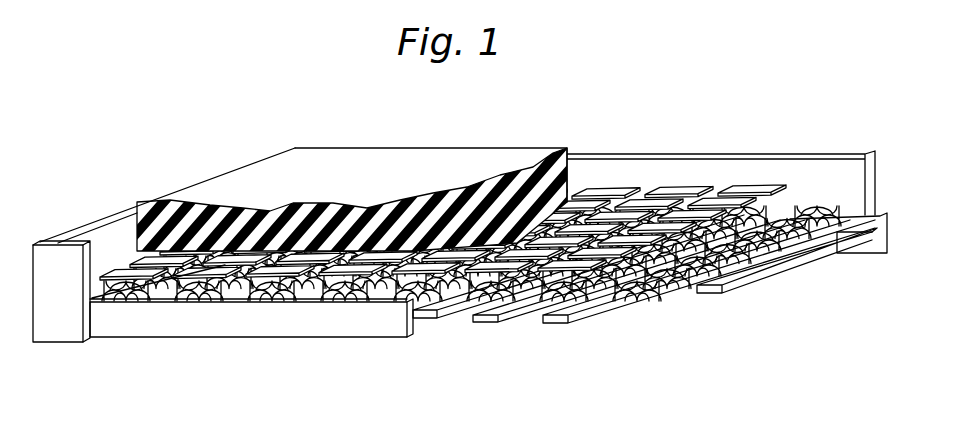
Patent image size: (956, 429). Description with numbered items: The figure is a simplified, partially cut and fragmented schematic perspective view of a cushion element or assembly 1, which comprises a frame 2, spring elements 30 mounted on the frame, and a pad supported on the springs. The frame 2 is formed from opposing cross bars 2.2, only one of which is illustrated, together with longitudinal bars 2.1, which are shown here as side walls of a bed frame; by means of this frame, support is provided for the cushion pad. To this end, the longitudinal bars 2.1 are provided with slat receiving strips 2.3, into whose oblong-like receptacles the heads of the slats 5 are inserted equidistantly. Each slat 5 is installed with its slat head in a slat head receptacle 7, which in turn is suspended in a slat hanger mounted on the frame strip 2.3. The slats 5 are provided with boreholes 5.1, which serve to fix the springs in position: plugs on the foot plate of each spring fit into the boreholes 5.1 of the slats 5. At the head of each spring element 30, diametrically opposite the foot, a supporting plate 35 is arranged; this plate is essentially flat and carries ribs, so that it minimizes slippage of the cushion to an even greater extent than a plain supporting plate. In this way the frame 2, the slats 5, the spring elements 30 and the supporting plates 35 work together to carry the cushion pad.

The cushion element or assembly 1 is at (490, 142).
The frame 2 is at (62, 222).
The longitudinal bars 2.1 is at (58, 335).
The cross bars 2.2 is at (127, 215).
The slat receiving strips 2.3 is at (230, 322).
The slats 5 is at (580, 300).
The boreholes 5.1 is at (760, 272).
The slat head receptacle 7 is at (436, 318).
The spring elements 30 is at (660, 270).
The supporting plate 35 is at (683, 200).